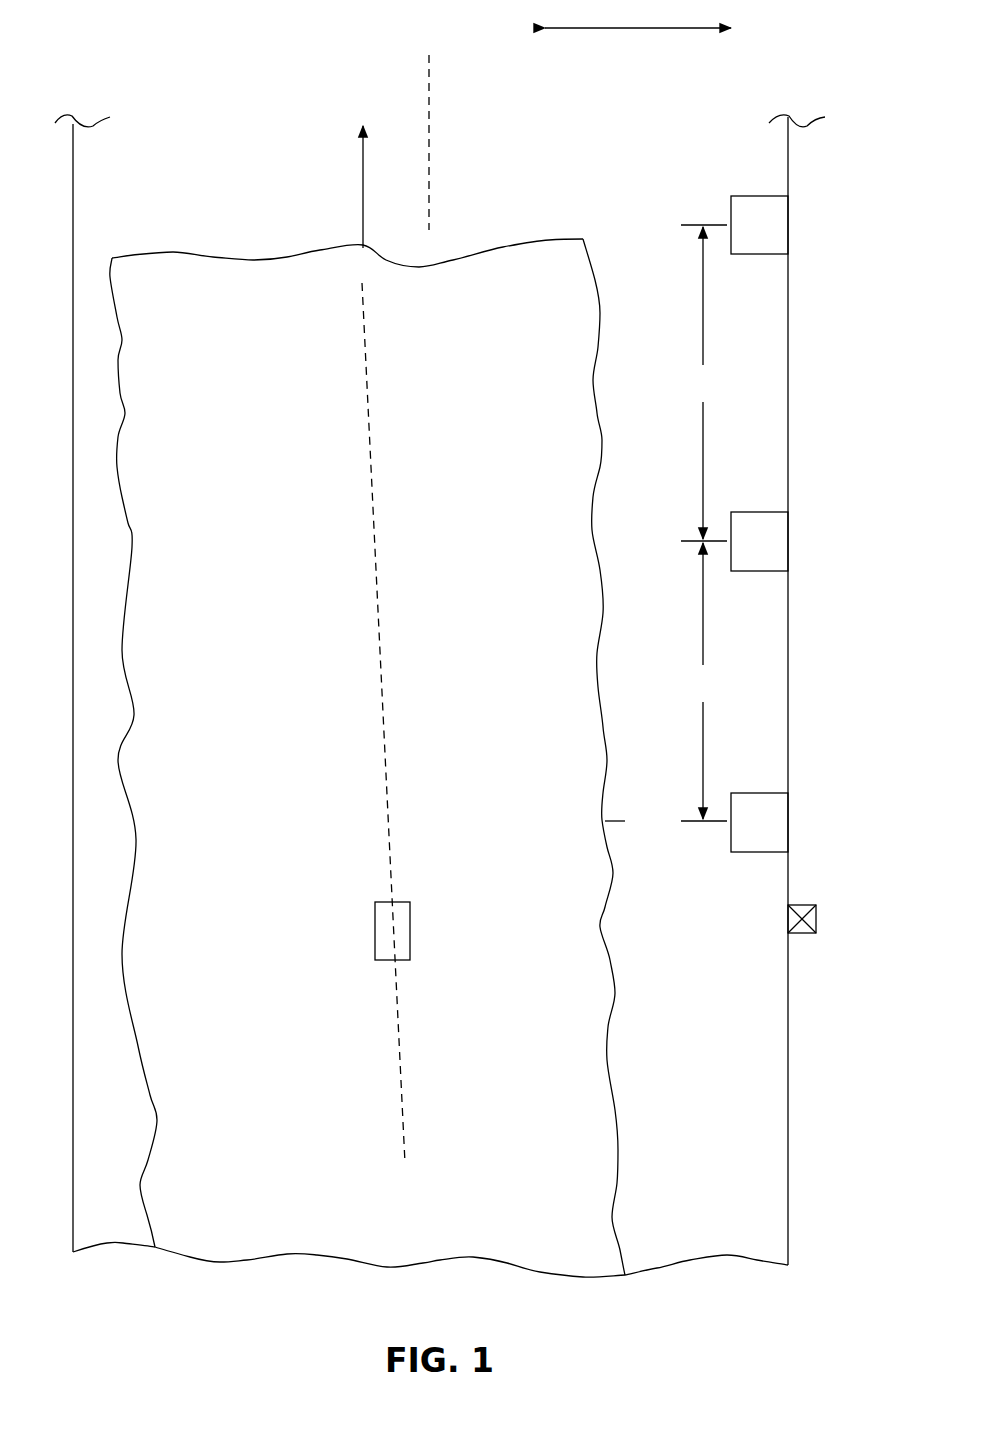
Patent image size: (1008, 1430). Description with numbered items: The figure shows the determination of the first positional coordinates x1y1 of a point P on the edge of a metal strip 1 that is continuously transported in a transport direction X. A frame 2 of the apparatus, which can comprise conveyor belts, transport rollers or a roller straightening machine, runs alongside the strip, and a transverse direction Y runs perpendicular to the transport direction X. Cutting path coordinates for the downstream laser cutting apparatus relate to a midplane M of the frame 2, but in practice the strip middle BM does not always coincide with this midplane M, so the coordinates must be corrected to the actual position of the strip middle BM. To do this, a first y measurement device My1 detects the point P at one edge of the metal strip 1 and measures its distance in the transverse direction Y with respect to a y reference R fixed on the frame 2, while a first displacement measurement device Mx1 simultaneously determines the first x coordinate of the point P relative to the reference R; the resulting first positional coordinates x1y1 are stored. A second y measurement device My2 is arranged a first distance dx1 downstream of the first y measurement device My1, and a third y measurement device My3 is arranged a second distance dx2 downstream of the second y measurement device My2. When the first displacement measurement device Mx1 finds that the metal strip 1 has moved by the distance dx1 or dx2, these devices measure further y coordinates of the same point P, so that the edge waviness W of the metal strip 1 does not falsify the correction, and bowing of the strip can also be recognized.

The metal strip 1 is at (367, 758).
The frame 2 is at (789, 322).
The edge waviness W is at (602, 443).
The point P is at (607, 819).
The y reference R is at (817, 913).
The midplane M is at (444, 142).
The transport direction X is at (377, 187).
The transverse direction Y is at (638, 15).
The strip middle BM is at (383, 723).
The first displacement measurement device Mx1 is at (409, 947).
The first y measurement device My1 is at (759, 822).
The second y measurement device My2 is at (759, 541).
The third y measurement device My3 is at (759, 225).
The first distance dx1 is at (704, 682).
The second distance dx2 is at (704, 383).
The first positional coordinates x1y1 is at (658, 841).